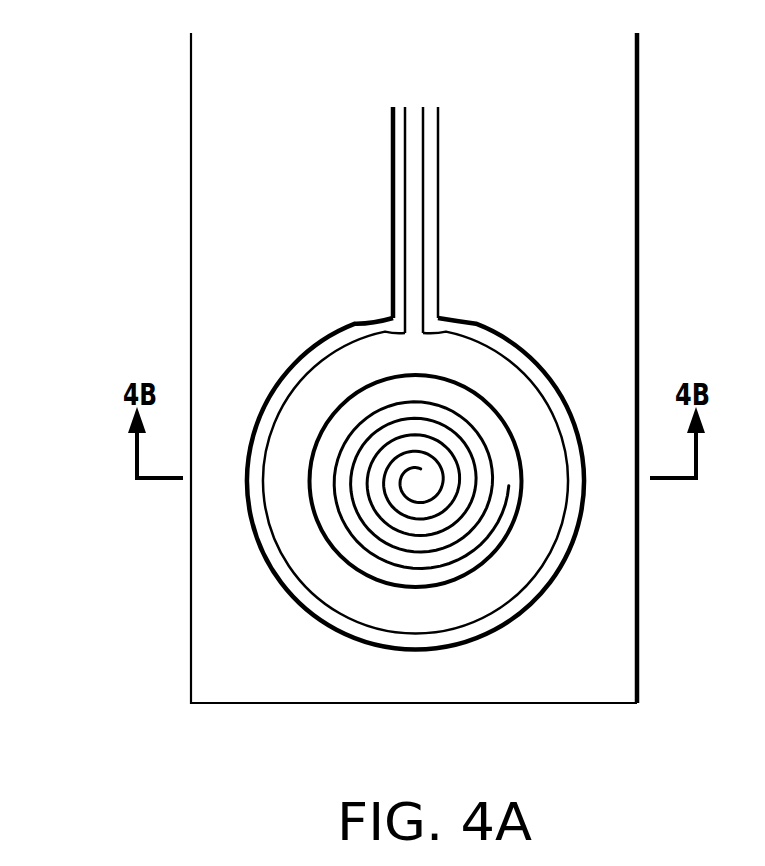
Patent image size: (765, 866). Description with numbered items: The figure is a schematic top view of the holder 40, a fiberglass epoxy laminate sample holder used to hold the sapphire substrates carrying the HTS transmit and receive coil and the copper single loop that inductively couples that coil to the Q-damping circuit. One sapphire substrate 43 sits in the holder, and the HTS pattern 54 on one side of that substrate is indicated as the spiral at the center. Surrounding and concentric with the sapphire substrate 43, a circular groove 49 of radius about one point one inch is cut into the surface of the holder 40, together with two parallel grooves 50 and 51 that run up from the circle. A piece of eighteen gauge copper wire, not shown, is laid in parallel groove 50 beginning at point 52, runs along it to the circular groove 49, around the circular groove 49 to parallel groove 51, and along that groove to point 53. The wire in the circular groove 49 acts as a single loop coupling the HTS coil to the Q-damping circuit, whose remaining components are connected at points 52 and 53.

The holder 40 is at (638, 160).
The sapphire substrate 43 is at (492, 425).
The circular groove 49 is at (268, 547).
The parallel groove 50 is at (400, 265).
The parallel groove 51 is at (430, 267).
The point 52 is at (400, 112).
The point 53 is at (432, 113).
The HTS pattern 54 is at (362, 418).